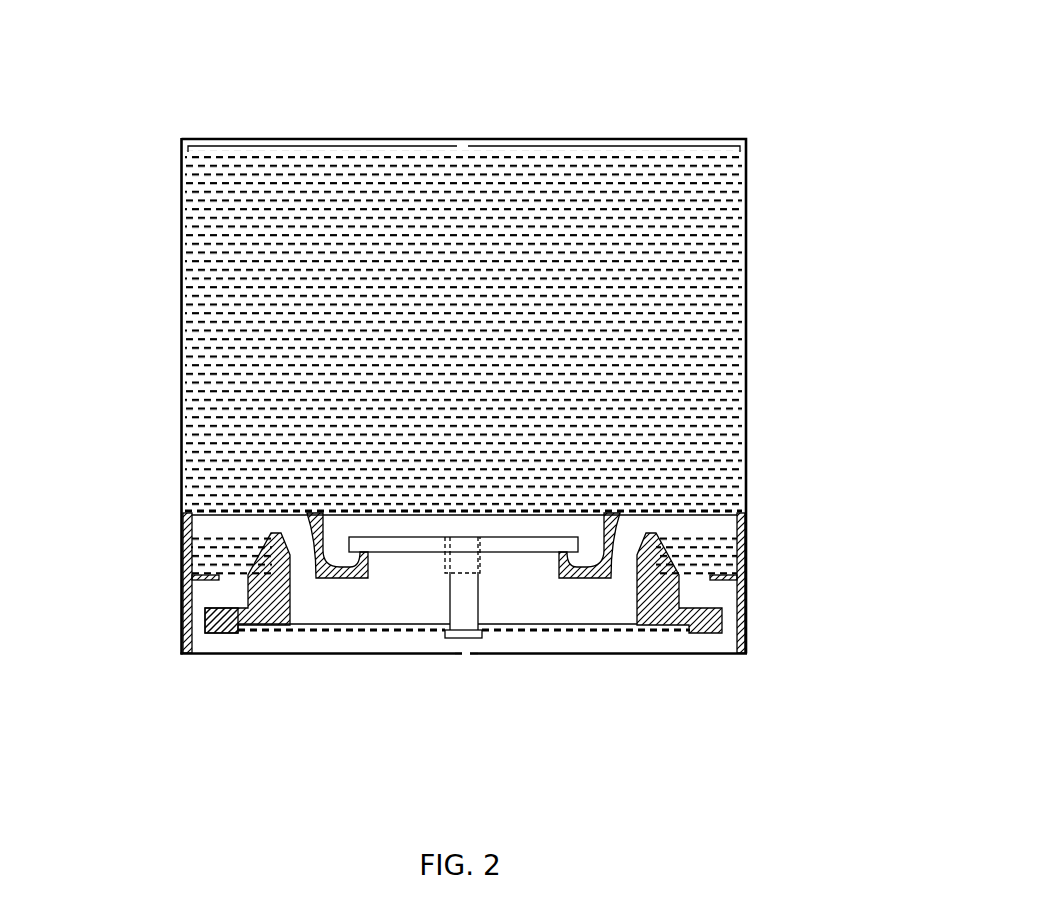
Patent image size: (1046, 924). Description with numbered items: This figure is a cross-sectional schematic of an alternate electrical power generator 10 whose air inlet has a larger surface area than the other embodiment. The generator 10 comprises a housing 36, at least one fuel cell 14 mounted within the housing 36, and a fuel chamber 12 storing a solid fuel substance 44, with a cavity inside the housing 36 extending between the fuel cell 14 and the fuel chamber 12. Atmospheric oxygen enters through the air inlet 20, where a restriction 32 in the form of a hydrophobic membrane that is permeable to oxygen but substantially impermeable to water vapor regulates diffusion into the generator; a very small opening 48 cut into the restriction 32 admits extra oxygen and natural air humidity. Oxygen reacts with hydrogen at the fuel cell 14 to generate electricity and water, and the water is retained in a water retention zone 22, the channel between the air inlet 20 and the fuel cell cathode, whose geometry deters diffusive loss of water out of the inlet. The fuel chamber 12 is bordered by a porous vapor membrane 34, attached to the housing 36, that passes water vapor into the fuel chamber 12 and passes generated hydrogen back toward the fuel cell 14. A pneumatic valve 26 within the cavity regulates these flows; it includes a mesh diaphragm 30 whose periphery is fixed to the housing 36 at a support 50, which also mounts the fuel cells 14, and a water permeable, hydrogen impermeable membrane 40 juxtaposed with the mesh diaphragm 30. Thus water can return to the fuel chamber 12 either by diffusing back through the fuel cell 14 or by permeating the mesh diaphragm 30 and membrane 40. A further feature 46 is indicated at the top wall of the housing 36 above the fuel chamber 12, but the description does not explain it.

The electrical power generator 10 is at (543, 115).
The fuel chamber 12 is at (722, 218).
The fuel cell 14 is at (710, 547).
The air inlet 20 is at (500, 640).
The water retention zone 22 is at (215, 600).
The valve 26 is at (415, 575).
The mesh diaphragm 30 is at (522, 632).
The restriction 32 is at (297, 657).
The porous vapor membrane 34 is at (530, 512).
The housing 36 is at (180, 290).
The water permeable, hydrogen impermeable membrane 40 is at (617, 628).
The fuel substance 44 is at (675, 323).
The top opening 46 is at (457, 128).
The small opening 48 is at (462, 668).
The support 50 is at (223, 620).